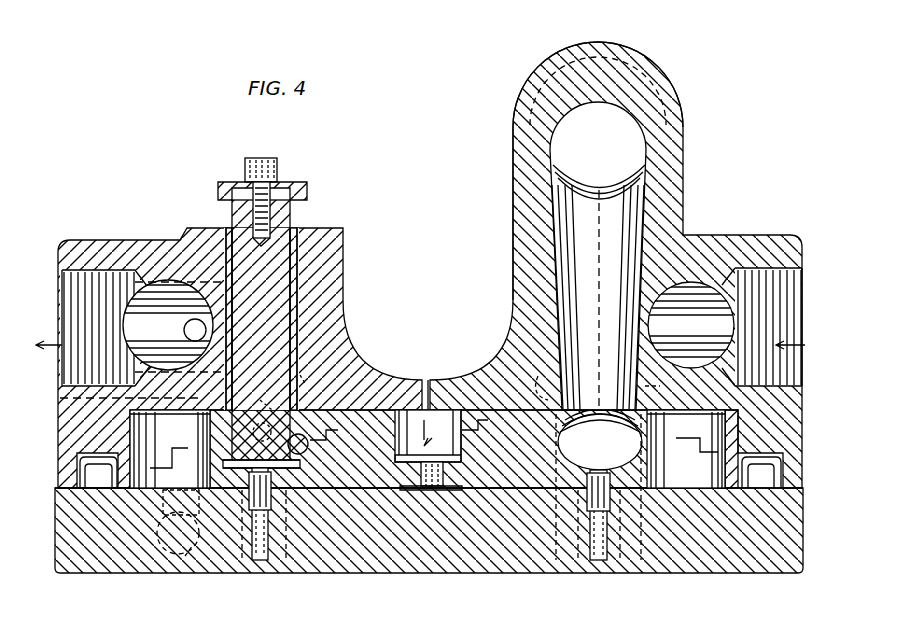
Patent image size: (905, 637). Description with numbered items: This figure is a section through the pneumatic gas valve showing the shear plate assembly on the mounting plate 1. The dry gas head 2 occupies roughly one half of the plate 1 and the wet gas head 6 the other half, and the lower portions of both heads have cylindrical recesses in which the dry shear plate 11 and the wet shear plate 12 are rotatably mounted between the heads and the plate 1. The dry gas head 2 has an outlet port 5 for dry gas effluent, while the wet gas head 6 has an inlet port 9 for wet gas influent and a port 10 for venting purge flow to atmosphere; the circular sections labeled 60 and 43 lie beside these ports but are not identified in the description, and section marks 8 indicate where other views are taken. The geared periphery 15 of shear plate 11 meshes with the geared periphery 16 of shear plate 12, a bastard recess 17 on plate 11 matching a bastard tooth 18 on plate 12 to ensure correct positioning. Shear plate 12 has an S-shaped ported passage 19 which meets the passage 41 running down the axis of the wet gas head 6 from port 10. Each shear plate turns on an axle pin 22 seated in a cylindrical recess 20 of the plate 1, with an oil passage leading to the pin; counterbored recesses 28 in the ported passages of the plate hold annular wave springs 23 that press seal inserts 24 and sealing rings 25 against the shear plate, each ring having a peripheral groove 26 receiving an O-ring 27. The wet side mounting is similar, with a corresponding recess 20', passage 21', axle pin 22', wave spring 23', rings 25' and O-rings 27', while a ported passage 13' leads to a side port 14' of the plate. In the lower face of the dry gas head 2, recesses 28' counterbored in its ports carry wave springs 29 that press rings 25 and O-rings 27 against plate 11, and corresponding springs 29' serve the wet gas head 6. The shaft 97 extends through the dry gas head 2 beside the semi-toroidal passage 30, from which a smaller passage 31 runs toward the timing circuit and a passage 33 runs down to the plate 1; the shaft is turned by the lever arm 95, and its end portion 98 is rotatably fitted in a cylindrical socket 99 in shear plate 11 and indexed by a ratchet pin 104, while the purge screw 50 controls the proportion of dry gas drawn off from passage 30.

The mounting plate 1 is at (472, 560).
The dry gas head 2 is at (335, 280).
The outlet port 5 is at (62, 280).
The wet gas head 6 is at (513, 180).
The section line 8- 8 is at (50, 292).
The inlet port 9 is at (770, 340).
The port 10 is at (678, 100).
The dry shear plate 11 is at (100, 470).
The wet shear plate 12 is at (462, 480).
The dashed bore 13' is at (176, 573).
The dashed recess 14' is at (158, 545).
The geared periphery 15 is at (378, 390).
The geared periphery 16 is at (480, 392).
The bastard recess 17 is at (90, 483).
The bastard tooth 18 is at (772, 470).
The ported passage 19 is at (570, 436).
The cylindrical recess 20 is at (203, 533).
The valve member 20' is at (600, 439).
The bolt bore 21' is at (419, 545).
The axle pin 22 is at (251, 534).
The bolt 22' is at (638, 515).
The annular wave spring 23 is at (237, 536).
The nut 23' is at (591, 516).
The seal insert 24 is at (285, 580).
The sealing ring 25 is at (285, 468).
The sleeve 25' is at (579, 467).
The peripheral groove 26 is at (290, 562).
The O-ring 27 is at (238, 453).
The bushing 27' is at (622, 442).
The recess 28 is at (322, 377).
The recess 28' is at (538, 367).
The annular wave spring 29 is at (273, 407).
The seal 29' is at (603, 363).
The semi-toroidal passage 30 is at (292, 250).
The smaller passage 31 is at (190, 330).
The passage 33 is at (60, 398).
The passage 41 is at (606, 200).
The ball 43 is at (696, 290).
The purge screw 50 is at (318, 432).
The ball 60 is at (165, 292).
The lever arm 95 is at (228, 194).
The shaft 97 is at (230, 246).
The end portion 98 is at (286, 465).
The cylindrical socket 99 is at (222, 462).
The ratchet pin 104 is at (305, 447).